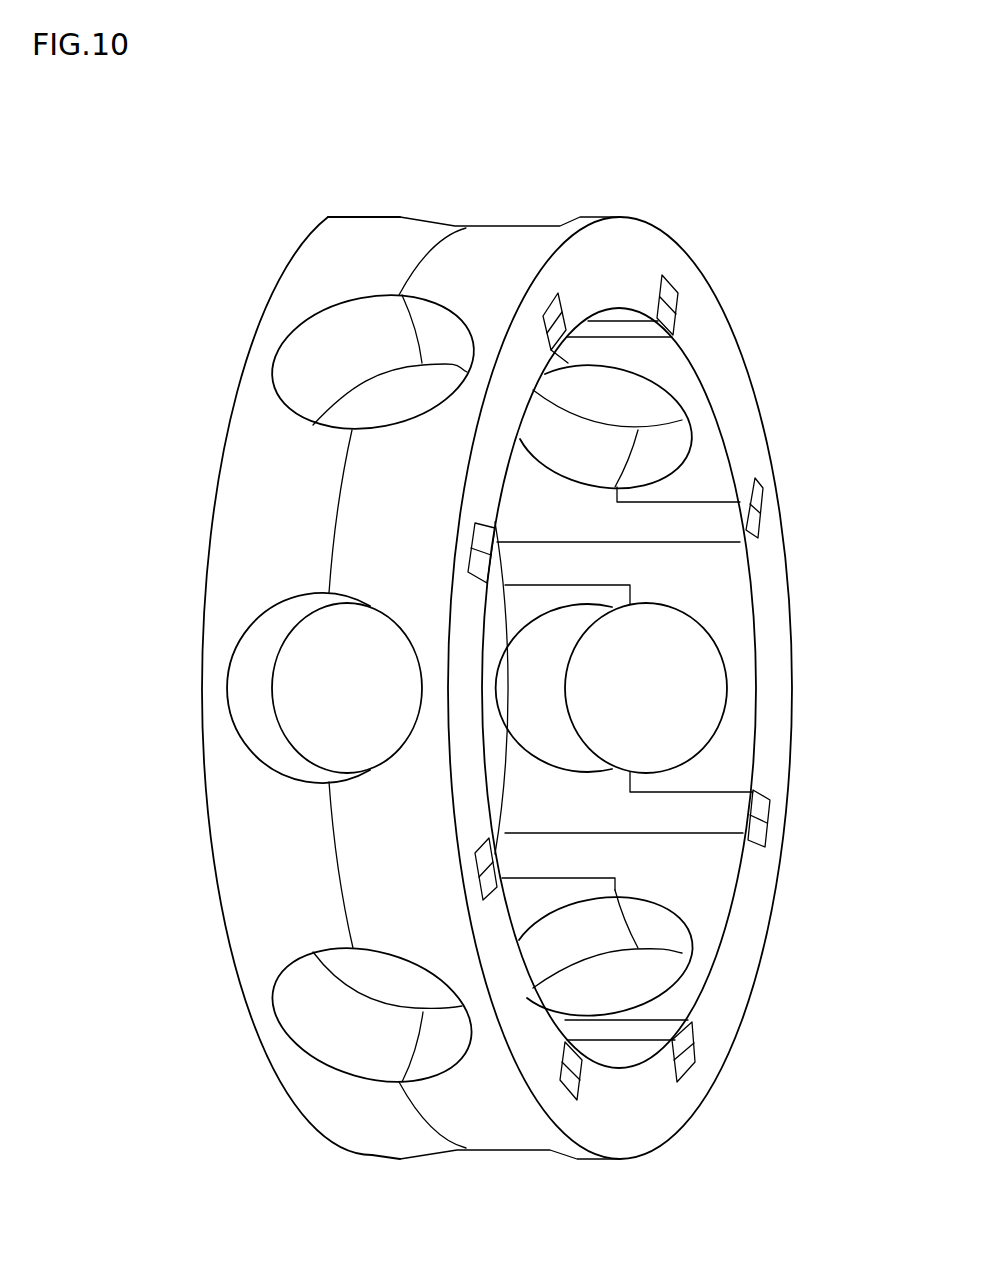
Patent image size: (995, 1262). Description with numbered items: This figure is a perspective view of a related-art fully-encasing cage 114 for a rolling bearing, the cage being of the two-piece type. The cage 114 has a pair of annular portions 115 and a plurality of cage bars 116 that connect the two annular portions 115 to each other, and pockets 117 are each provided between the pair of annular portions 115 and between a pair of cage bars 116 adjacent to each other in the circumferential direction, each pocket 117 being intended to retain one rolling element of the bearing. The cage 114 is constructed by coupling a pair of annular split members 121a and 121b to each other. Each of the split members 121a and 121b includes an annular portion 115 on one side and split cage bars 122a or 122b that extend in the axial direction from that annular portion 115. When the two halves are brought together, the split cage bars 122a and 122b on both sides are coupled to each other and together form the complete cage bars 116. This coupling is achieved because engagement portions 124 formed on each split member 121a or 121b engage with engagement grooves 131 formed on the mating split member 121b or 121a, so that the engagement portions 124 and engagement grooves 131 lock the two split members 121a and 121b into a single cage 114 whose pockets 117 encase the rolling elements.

The fully-encasing cage 114 is at (746, 225).
The annular portion 115 is at (215, 660).
The cage bar 116 is at (393, 258).
The pocket 117 is at (303, 652).
The annular split member 121a is at (385, 216).
The annular split member 121b is at (594, 216).
The split cage bar 122a is at (310, 492).
The split cage bar 122b is at (360, 553).
The engagement portion 124 is at (680, 510).
The engagement groove 131 is at (565, 550).